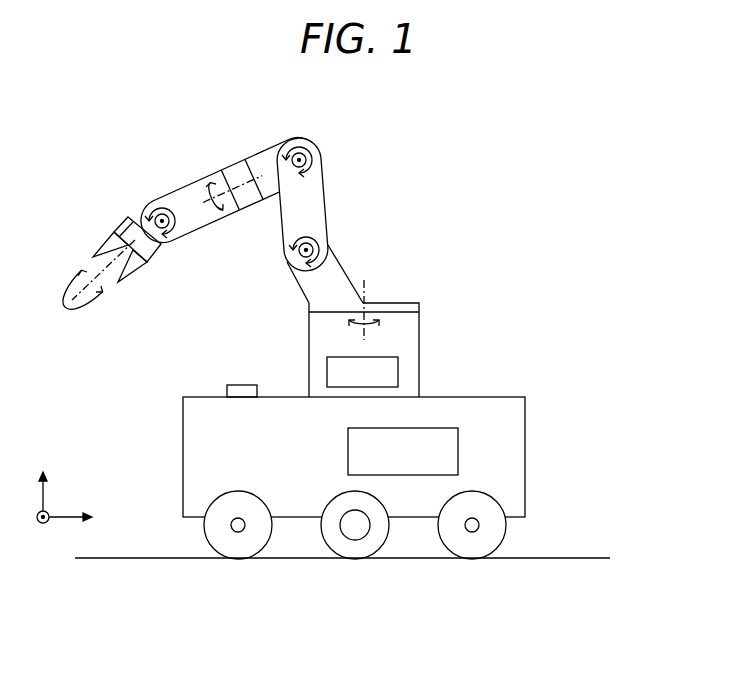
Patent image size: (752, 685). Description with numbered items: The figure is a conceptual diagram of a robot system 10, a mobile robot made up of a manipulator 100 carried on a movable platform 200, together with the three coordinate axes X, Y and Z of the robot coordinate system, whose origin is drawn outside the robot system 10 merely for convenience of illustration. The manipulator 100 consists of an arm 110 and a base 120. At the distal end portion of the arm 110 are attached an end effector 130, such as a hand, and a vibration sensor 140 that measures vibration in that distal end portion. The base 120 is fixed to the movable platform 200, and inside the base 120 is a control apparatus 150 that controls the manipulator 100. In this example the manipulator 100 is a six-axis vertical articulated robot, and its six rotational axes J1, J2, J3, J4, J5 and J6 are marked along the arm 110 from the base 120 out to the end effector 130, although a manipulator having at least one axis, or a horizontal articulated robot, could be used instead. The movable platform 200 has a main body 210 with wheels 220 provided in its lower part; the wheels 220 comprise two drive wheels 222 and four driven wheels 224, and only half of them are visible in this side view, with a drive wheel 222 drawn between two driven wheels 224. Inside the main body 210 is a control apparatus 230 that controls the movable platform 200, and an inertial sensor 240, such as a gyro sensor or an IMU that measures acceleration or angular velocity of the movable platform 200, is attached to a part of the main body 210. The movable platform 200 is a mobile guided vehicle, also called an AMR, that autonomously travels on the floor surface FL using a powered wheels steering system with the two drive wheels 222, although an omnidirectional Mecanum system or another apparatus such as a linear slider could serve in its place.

The robot system 10 is at (608, 188).
The manipulator 100 is at (517, 205).
The arm 110 is at (327, 196).
The base 120 is at (419, 343).
The end effector 130 is at (137, 273).
The vibration sensor 140 is at (123, 225).
The control apparatus 150 is at (398, 372).
The movable platform 200 is at (570, 427).
The main body 210 is at (525, 487).
The wheels 220 is at (525, 622).
The drive wheel 222 is at (355, 544).
The driven wheel 224 is at (240, 544).
The control apparatus 230 is at (418, 427).
The inertial sensor 240 is at (242, 383).
The axis J1 is at (364, 299).
The axis J2 is at (332, 244).
The axis J3 is at (318, 150).
The axis J4 is at (251, 180).
The axis J5 is at (161, 212).
The axis J6 is at (90, 284).
The floor surface FL is at (560, 558).